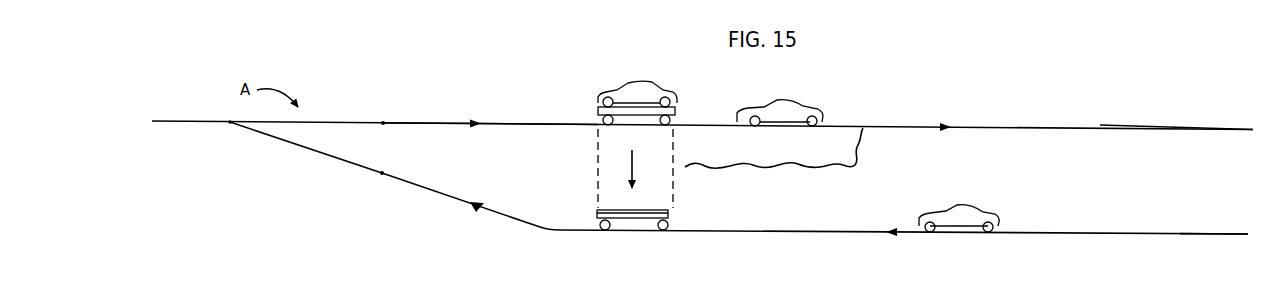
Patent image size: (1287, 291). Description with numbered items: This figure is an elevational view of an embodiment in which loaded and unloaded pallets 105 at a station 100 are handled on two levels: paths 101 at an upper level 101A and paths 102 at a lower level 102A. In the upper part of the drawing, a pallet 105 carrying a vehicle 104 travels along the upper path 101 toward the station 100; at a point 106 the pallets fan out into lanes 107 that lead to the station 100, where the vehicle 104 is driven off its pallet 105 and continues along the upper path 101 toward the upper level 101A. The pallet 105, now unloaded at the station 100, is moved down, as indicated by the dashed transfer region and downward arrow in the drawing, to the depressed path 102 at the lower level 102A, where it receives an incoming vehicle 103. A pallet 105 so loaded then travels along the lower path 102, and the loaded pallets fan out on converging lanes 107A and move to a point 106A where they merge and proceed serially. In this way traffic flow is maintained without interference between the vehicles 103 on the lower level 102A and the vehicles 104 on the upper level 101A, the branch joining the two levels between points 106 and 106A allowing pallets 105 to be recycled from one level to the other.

The station 100 is at (697, 72).
The path 101 is at (183, 122).
The upper level 101A is at (1140, 130).
The path 102 is at (922, 208).
The lower level 102A is at (1210, 234).
The incoming vehicle 103 is at (975, 217).
The vehicle 104 is at (627, 87).
The pallet 105 is at (598, 107).
The point 106 is at (384, 122).
The point 106A is at (384, 172).
The lane 107 is at (508, 124).
The converging lane 107A is at (460, 202).